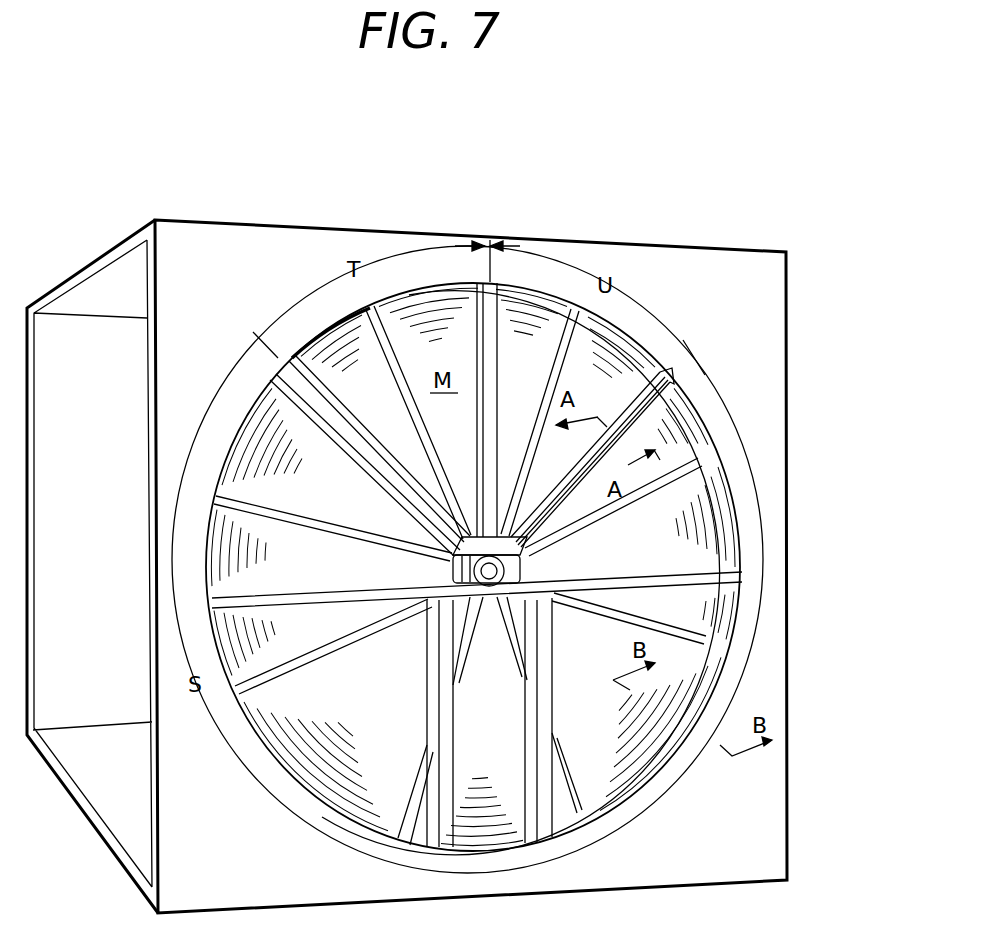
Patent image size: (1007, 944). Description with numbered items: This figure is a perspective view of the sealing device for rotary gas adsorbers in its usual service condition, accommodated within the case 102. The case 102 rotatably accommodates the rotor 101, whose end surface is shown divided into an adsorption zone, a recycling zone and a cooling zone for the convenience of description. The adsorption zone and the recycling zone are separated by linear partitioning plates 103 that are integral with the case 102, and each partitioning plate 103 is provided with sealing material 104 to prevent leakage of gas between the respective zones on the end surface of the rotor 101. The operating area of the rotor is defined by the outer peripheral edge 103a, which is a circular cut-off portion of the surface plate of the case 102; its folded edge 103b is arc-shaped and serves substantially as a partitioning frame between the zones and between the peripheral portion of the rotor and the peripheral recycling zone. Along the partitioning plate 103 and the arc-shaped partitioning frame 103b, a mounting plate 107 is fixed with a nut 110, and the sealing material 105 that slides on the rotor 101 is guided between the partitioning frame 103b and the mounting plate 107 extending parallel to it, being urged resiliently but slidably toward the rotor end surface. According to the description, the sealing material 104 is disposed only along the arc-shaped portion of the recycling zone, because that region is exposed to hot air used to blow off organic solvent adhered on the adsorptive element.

The rotor 101 is at (590, 730).
The case 102 is at (786, 290).
The partitioning plate 103 is at (320, 400).
The outer peripheral edge 103a is at (660, 335).
The folded edge (partitioning frame) 103b is at (612, 330).
The sealing material 104 is at (625, 345).
The sealing material 105 is at (565, 305).
The mounting plate 107 is at (543, 493).
The nut 110 is at (670, 397).